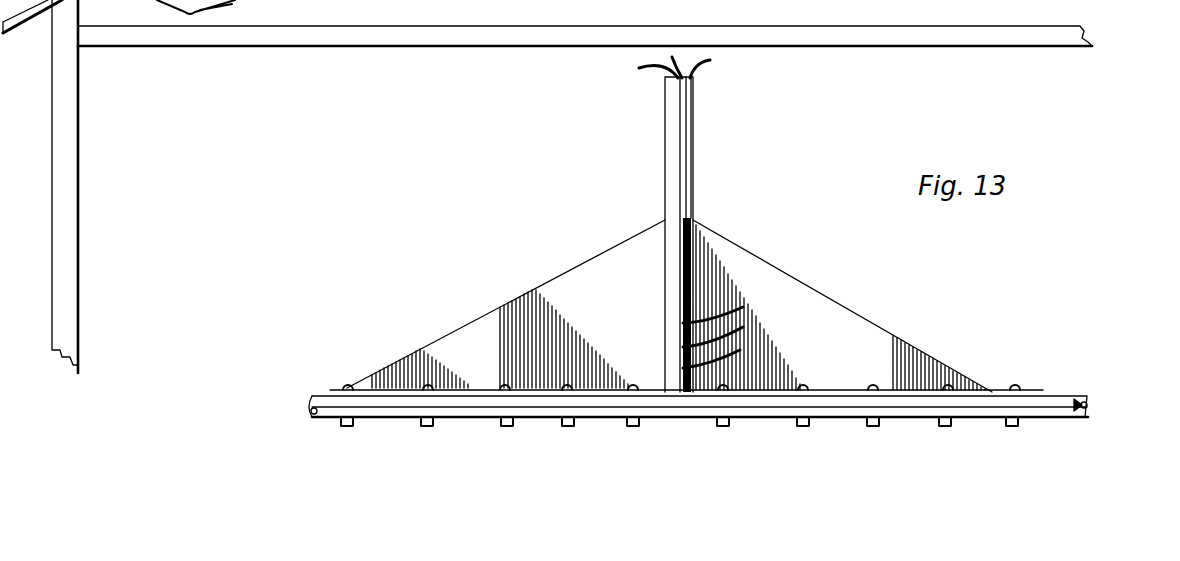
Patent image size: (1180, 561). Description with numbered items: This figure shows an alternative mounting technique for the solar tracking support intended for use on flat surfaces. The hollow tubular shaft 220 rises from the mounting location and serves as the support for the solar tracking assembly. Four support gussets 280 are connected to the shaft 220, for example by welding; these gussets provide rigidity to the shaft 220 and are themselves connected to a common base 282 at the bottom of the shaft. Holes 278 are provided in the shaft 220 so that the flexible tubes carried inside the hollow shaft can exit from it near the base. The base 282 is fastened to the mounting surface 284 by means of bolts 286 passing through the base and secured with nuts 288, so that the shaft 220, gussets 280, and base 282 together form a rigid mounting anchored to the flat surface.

The shaft 220 is at (685, 143).
The holes 278 is at (743, 307).
The support gussets 280 is at (608, 268).
The base 282 is at (1033, 393).
The mounting surface 284 is at (1087, 400).
The bolts 286 is at (567, 386).
The nuts 288 is at (565, 425).